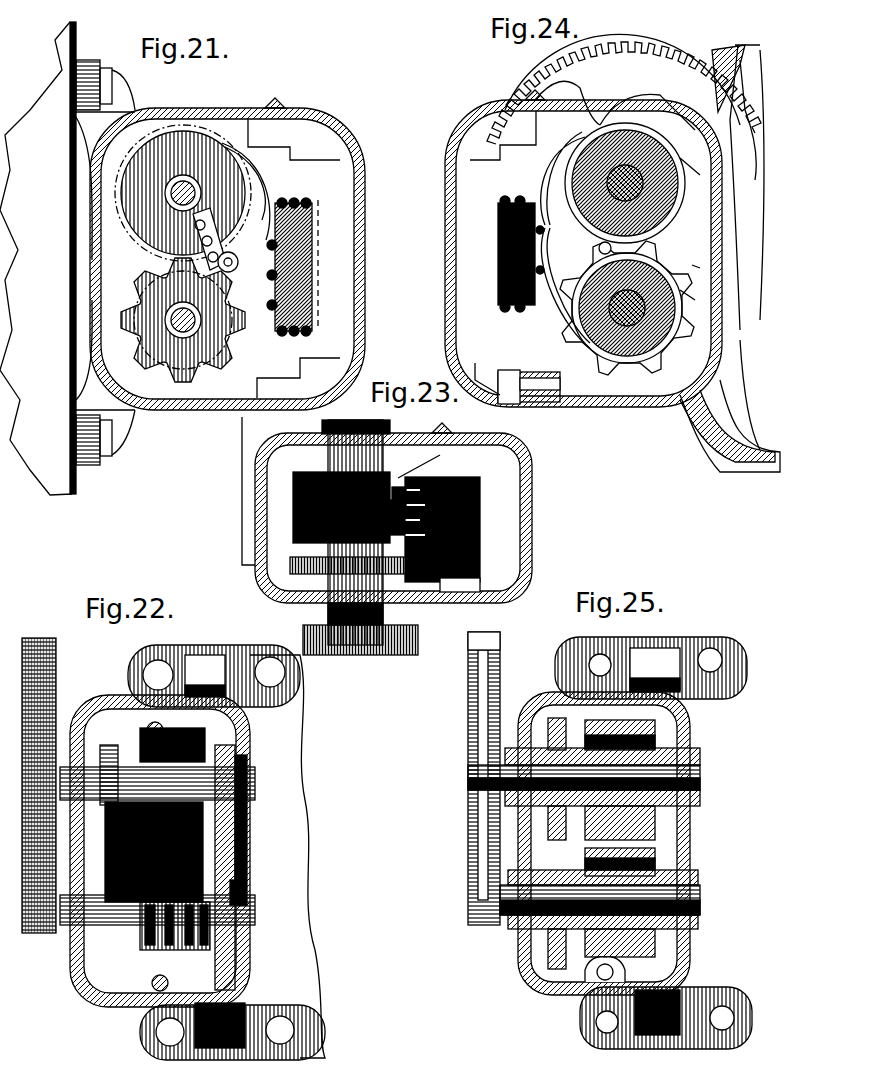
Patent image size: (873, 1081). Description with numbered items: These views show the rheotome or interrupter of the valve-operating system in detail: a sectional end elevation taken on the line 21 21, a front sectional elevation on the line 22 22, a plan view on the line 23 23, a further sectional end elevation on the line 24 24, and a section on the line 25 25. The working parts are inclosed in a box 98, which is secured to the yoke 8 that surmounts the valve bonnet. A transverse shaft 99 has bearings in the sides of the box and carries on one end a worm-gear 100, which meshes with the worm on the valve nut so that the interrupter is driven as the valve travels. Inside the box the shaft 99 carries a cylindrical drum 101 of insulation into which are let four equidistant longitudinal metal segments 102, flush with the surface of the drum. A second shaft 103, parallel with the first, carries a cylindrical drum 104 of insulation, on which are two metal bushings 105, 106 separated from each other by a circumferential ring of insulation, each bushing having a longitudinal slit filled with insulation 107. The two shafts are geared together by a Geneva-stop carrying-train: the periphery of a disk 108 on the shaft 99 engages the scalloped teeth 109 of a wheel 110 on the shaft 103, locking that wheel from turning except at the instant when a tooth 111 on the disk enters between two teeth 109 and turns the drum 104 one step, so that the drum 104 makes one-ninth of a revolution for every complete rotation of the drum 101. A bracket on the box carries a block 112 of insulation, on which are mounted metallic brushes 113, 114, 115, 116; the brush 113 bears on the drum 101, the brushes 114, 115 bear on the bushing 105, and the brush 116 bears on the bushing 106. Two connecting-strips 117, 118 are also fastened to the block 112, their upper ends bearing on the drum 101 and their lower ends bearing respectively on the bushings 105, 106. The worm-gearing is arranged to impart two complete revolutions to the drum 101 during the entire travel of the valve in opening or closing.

In FIG. 21, the yoke 8 is at (67, 258).
In FIG. 22, the yoke 8 is at (270, 877).
In FIG. 25, the section line 21 21 is at (545, 1030).
In FIG. 21, the section line 22 22 is at (275, 440).
In FIG. 21, the section line 23 23 is at (400, 198).
In FIG. 22, the section line 24 24 is at (203, 1075).
In FIG. 21, the section line 25 25 is at (183, 462).
In FIG. 21, the box 98 is at (215, 108).
In FIG. 24, the box 98 is at (612, 105).
In FIG. 23, the box 98 is at (262, 580).
In FIG. 22, the box 98 is at (250, 733).
In FIG. 25, the box 98 is at (690, 722).
In FIG. 21, the transverse shaft 99 is at (172, 198).
In FIG. 25, the transverse shaft 99 is at (700, 770).
In FIG. 24, the worm-gear 100 is at (520, 84).
In FIG. 23, the worm-gear 100 is at (360, 650).
In FIG. 22, the worm-gear 100 is at (56, 660).
In FIG. 25, the worm-gear 100 is at (468, 695).
In FIG. 24, the cylindrical drum 101 is at (655, 208).
In FIG. 23, the cylindrical drum 101 is at (387, 478).
In FIG. 25, the cylindrical drum 101 is at (655, 740).
In FIG. 24, the metal segments 102 is at (650, 245).
In FIG. 23, the metal segments 102 is at (292, 520).
In FIG. 25, the metal segments 102 is at (640, 712).
In FIG. 21, the second shaft 103 is at (175, 325).
In FIG. 25, the second shaft 103 is at (700, 897).
In FIG. 24, the cylindrical drum 104 is at (690, 318).
In FIG. 25, the cylindrical drum 104 is at (655, 860).
In FIG. 22, the metal bushing 105 is at (185, 945).
In FIG. 25, the metal bushing 105 is at (590, 838).
In FIG. 24, the metal bushing 106 is at (701, 292).
In FIG. 22, the metal bushing 106 is at (205, 945).
In FIG. 25, the metal bushing 106 is at (650, 843).
In FIG. 24, the insulation 107 is at (600, 372).
In FIG. 22, the insulation 107 is at (210, 950).
In FIG. 21, the disk 108 is at (150, 240).
In FIG. 23, the disk 108 is at (330, 568).
In FIG. 22, the disk 108 is at (110, 755).
In FIG. 25, the disk 108 is at (566, 725).
In FIG. 21, the scalloped teeth 109 is at (152, 282).
In FIG. 21, the wheel 110 is at (150, 312).
In FIG. 22, the wheel 110 is at (135, 935).
In FIG. 25, the wheel 110 is at (548, 940).
In FIG. 24, the tooth 111 is at (598, 248).
In FIG. 24, the block of insulation 112 is at (497, 243).
In FIG. 23, the block of insulation 112 is at (480, 530).
In FIG. 22, the brush 113 is at (250, 782).
In FIG. 23, the brush 114 is at (415, 487).
In FIG. 22, the brush 114 is at (148, 945).
In FIG. 22, the brush 115 is at (168, 945).
In FIG. 22, the brush 116 is at (250, 895).
In FIG. 21, the connecting-strip 117 is at (255, 239).
In FIG. 23, the connecting-strip 117 is at (406, 535).
In FIG. 24, the connecting-strip 118 is at (548, 228).
In FIG. 23, the connecting-strip 118 is at (430, 452).